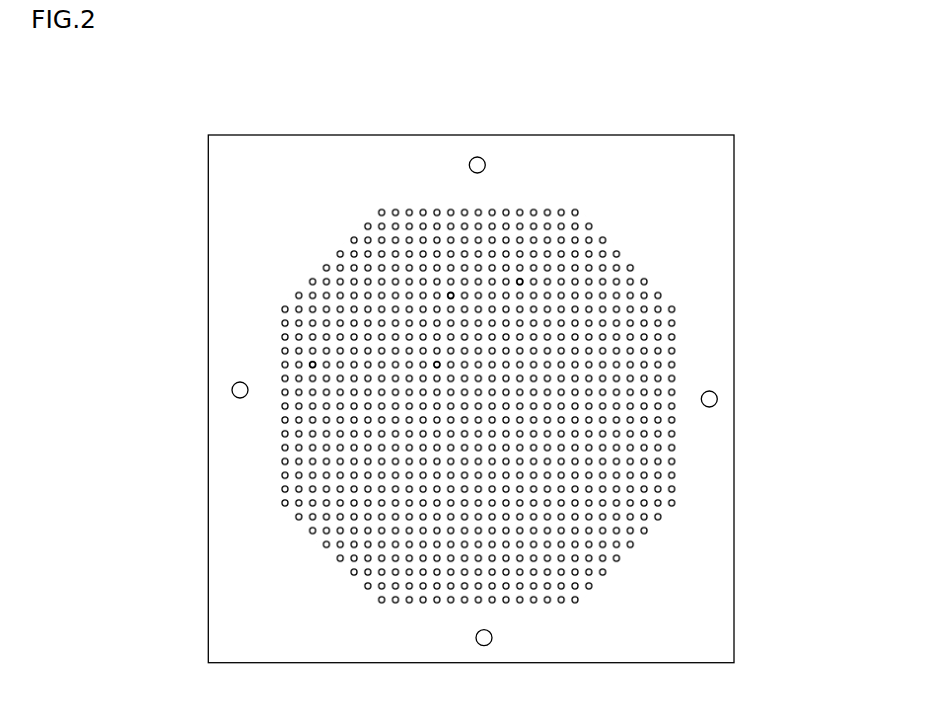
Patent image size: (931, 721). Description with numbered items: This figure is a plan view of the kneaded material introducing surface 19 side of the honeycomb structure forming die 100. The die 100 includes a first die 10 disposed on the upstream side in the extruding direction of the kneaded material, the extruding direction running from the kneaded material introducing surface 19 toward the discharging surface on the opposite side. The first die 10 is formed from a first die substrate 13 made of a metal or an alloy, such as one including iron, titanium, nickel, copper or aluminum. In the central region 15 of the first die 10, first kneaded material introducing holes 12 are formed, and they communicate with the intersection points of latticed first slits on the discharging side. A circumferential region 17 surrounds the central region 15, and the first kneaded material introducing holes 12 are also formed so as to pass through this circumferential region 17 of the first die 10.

The honeycomb structure forming die 100 is at (790, 68).
The first die 10 is at (687, 348).
The first die substrate 13 is at (685, 248).
The first kneaded material introducing holes 12 is at (520, 279).
The kneaded material introducing surface 19 is at (447, 293).
The central region 15 is at (416, 356).
The circumferential region 17 is at (298, 359).